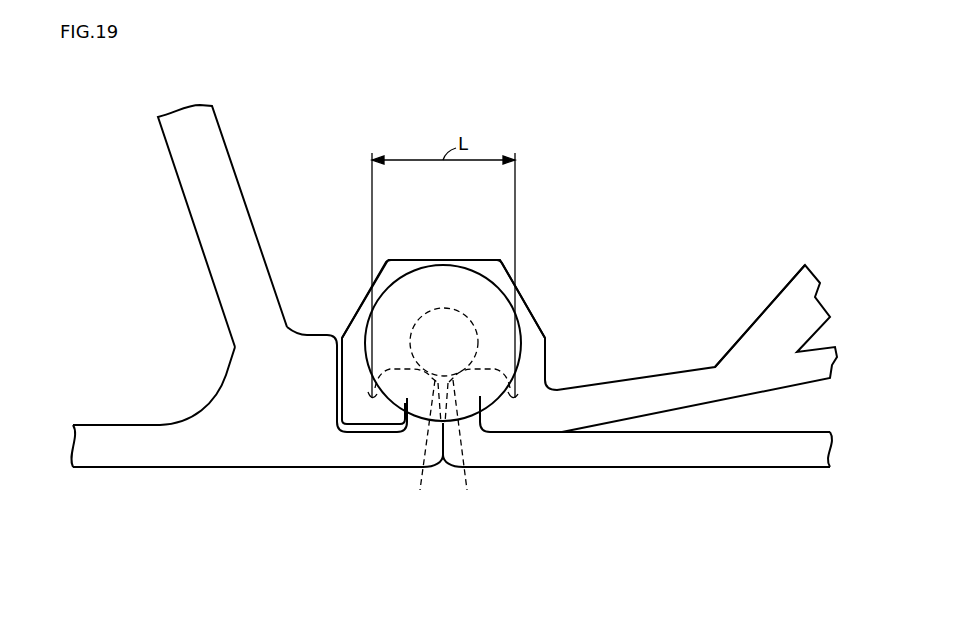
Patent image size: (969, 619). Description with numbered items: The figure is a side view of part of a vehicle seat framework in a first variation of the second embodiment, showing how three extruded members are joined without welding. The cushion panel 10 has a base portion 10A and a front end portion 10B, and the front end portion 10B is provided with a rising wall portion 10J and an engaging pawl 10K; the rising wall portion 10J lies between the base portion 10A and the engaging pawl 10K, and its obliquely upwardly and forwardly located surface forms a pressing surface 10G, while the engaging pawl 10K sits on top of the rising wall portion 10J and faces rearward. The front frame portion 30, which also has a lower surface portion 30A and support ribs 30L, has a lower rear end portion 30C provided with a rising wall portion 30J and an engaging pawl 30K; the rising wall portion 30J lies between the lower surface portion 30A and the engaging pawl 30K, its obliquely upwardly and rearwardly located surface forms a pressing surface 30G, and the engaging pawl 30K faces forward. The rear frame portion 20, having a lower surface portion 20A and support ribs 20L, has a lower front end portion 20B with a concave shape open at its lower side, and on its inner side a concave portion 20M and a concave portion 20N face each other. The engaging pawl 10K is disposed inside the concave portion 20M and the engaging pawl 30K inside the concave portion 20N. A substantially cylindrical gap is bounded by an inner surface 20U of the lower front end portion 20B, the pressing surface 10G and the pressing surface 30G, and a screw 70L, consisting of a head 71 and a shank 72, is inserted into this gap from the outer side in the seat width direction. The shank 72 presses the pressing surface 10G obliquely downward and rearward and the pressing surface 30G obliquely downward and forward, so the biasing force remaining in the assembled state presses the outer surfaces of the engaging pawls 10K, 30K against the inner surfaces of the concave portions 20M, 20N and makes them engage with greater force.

The cushion panel 10 is at (645, 467).
The base portion 10A is at (717, 450).
The front end portion 10B is at (510, 457).
The pressing surface 10G is at (465, 447).
The rising wall portion 10J is at (465, 428).
The engaging pawl 10K is at (505, 397).
The rear frame portion 20 is at (697, 367).
The lower surface portion 20A is at (648, 397).
The lower front end portion 20B is at (528, 304).
The support ribs 20L is at (783, 330).
The concave portion 20M is at (512, 398).
The concave portion 20N is at (370, 398).
The inner surface 20U is at (416, 318).
The front frame portion 30 is at (188, 467).
The lower surface portion 30A is at (103, 448).
The lower rear end portion 30C is at (373, 457).
The pressing surface 30G is at (420, 447).
The rising wall portion 30J is at (420, 426).
The engaging pawl 30K is at (380, 397).
The support ribs 30L is at (223, 234).
The screw 70L is at (443, 300).
The head 71 is at (495, 285).
The shank 72 is at (466, 314).